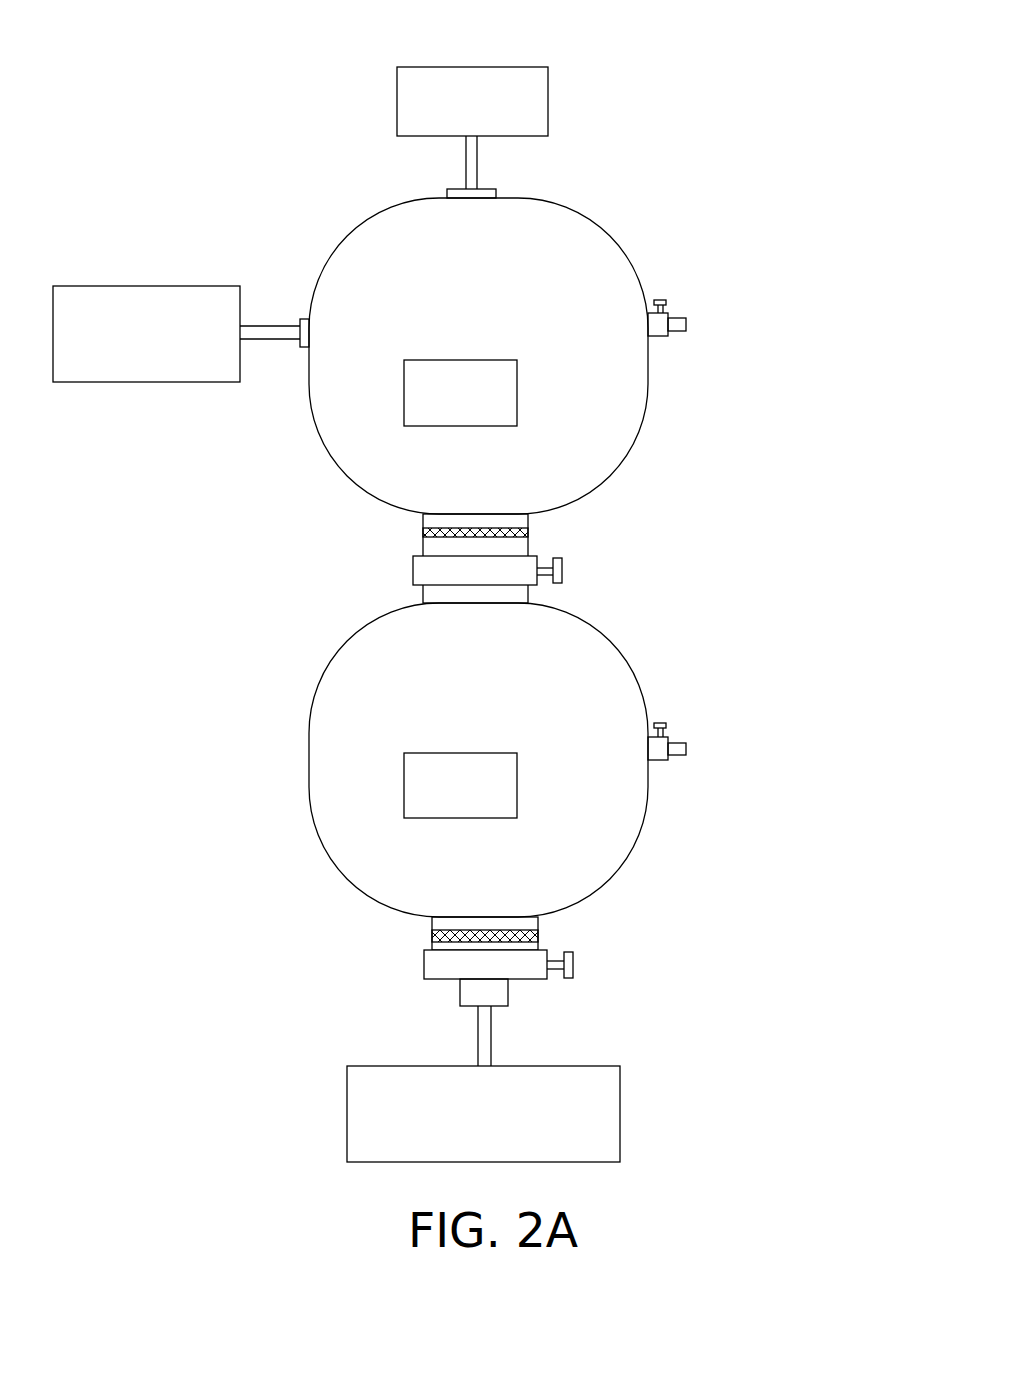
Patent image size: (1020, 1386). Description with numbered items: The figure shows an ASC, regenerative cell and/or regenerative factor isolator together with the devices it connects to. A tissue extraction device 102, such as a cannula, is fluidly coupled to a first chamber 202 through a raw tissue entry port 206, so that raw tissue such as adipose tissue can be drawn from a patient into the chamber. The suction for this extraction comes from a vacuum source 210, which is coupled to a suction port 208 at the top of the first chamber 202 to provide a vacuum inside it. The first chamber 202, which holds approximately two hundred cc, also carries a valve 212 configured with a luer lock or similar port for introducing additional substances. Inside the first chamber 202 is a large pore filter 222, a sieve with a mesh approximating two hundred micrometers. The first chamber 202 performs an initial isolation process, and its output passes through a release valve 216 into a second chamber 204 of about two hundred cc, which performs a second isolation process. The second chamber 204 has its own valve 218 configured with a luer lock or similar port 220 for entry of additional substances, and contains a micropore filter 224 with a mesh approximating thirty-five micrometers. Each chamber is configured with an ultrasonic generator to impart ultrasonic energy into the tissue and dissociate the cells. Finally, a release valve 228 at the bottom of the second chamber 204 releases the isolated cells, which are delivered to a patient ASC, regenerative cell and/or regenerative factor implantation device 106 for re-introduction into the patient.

The tissue extraction device 102 is at (146, 317).
The patient ASC, regenerative cell and/or regenerative factor implantation device 106 is at (560, 1066).
The first chamber 202 is at (593, 219).
The second chamber 204 is at (600, 626).
The raw tissue entry port 206 is at (300, 322).
The suction port 208 is at (686, 326).
The vacuum source 210 is at (476, 67).
The valve 212 is at (661, 300).
The release valve 216 is at (562, 571).
The valve 218 is at (662, 723).
The port 220 is at (686, 750).
The large pore filter 222 is at (423, 530).
The micropore filter 224 is at (432, 936).
The release valve 228 is at (573, 968).